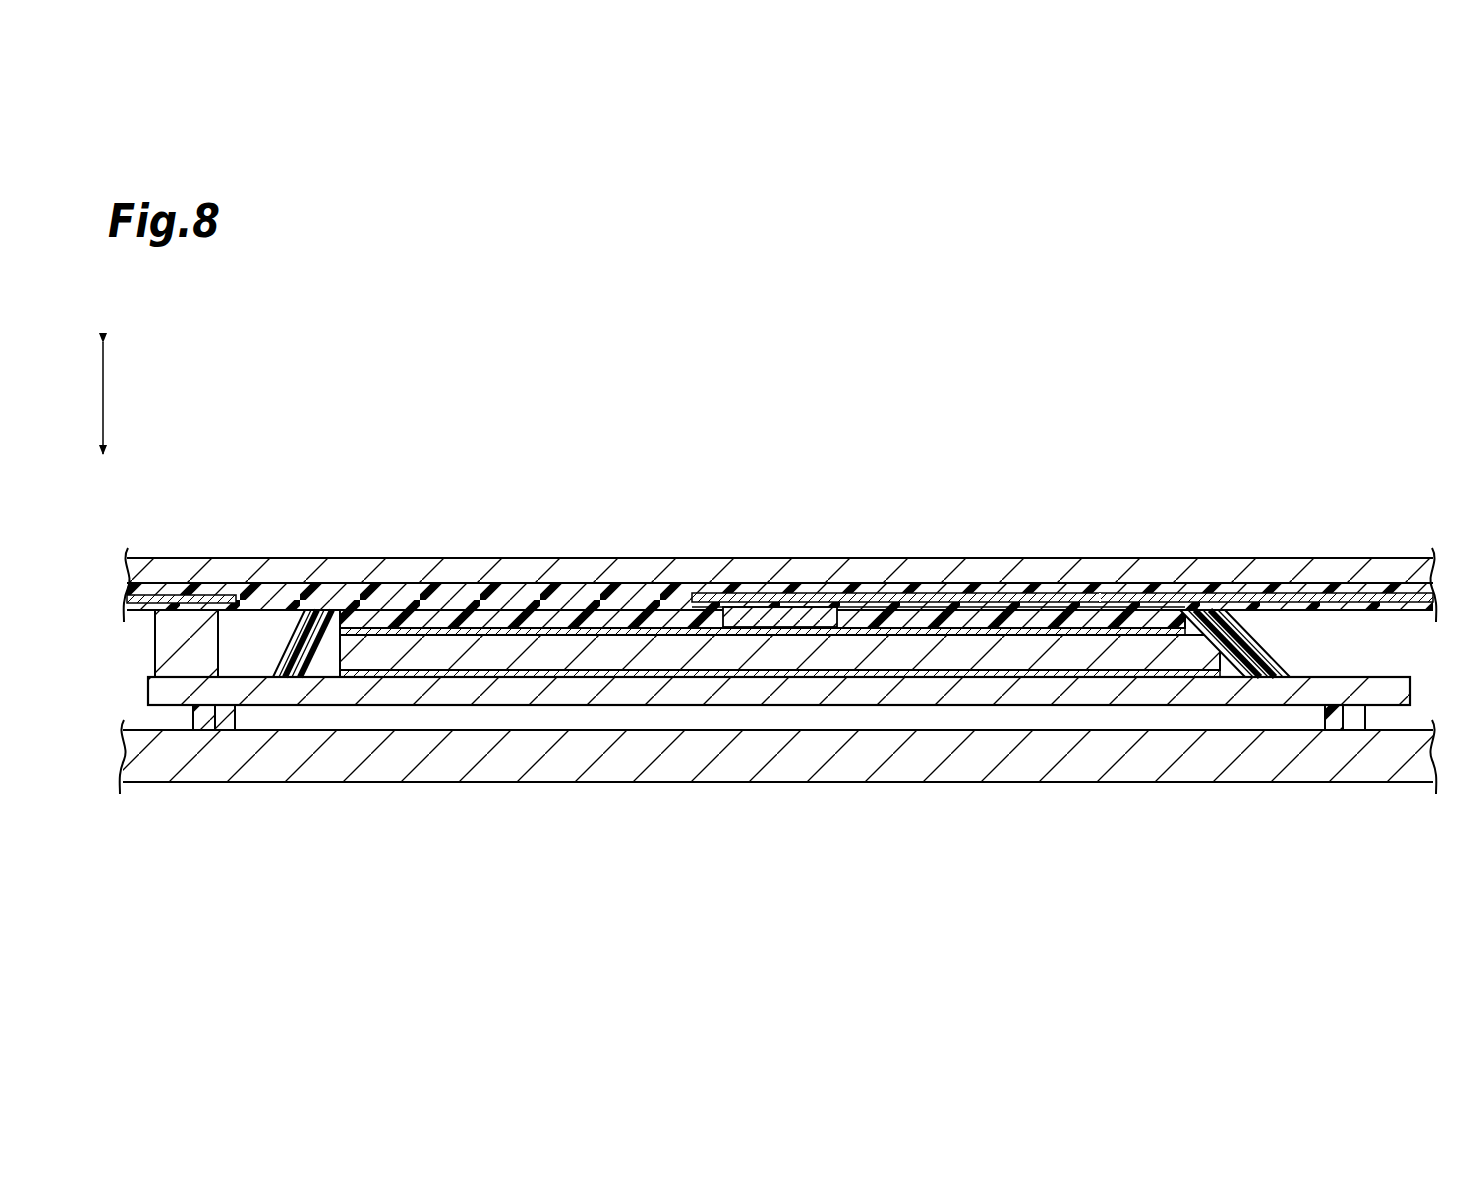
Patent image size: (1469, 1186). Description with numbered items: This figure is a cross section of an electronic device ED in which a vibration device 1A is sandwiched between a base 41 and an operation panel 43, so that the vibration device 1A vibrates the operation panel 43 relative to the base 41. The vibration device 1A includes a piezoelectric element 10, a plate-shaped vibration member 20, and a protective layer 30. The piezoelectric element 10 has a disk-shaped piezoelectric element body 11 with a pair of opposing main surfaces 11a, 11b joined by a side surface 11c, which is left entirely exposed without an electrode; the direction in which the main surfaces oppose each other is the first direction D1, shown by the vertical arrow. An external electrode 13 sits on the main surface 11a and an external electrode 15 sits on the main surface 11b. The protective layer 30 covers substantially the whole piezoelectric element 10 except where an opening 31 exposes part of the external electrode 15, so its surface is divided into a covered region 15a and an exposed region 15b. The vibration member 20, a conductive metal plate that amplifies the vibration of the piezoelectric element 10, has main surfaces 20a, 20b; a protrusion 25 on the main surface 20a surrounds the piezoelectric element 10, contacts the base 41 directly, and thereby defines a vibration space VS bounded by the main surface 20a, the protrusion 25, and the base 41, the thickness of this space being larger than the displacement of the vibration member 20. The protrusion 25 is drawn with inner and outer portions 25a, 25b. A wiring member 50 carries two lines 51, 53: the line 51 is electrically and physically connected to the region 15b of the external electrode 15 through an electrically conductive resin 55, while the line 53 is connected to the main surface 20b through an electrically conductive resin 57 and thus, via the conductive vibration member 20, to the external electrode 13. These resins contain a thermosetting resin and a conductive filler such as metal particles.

The vibration device 1A is at (1403, 667).
The piezoelectric element 10 is at (772, 660).
The piezoelectric element body 11 is at (737, 678).
The main surface 11a is at (512, 672).
The main surface 11b is at (512, 630).
The side surface 11c is at (307, 610).
The external electrode 13 is at (1140, 672).
The external electrode 15 is at (762, 552).
The region 15a is at (412, 618).
The region 15b is at (770, 615).
The vibration member 20 is at (808, 719).
The main surface 20a is at (1168, 708).
The main surface 20b is at (1333, 678).
The protrusion 25 is at (793, 779).
The first support portion 25a is at (182, 722).
The second support portion 25b is at (212, 730).
The protective layer 30 is at (585, 598).
The opening 31 is at (836, 606).
The base 41 is at (930, 783).
The operation panel 43 is at (183, 583).
The wiring member 50 is at (1266, 542).
The line 51 is at (1268, 602).
The line 53 is at (157, 592).
The electrically conductive resin 55 is at (722, 597).
The electrically conductive resin 57 is at (235, 608).
The first direction D1 is at (103, 407).
The electronic device ED is at (1197, 500).
The vibration space VS is at (793, 718).